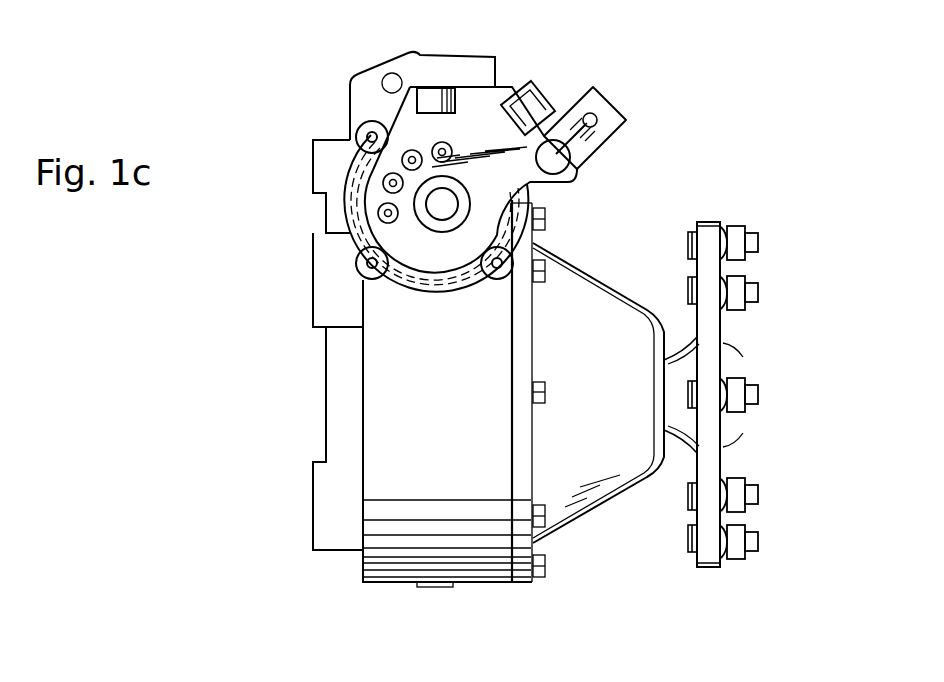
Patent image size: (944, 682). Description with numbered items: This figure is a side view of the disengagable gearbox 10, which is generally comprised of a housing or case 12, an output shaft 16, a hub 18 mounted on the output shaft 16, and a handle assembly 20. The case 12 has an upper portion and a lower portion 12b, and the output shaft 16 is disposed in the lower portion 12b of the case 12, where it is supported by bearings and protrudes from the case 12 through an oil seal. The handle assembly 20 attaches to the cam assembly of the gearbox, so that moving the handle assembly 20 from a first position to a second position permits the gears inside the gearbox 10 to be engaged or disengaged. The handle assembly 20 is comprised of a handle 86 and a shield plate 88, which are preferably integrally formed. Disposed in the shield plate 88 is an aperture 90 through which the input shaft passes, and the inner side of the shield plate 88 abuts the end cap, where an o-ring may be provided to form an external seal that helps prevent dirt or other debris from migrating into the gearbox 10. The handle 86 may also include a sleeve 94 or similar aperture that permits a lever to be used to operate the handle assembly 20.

The disengagable gearbox 10 is at (748, 130).
The housing or case 12 is at (349, 591).
The lower portion of case 12b is at (375, 369).
The output shaft 16 is at (760, 395).
The hub 18 is at (708, 222).
The handle assembly 20 is at (607, 79).
The handle 86 is at (592, 117).
The shield plate 88 is at (467, 90).
The aperture 90 is at (443, 213).
The sleeve 94 is at (435, 97).